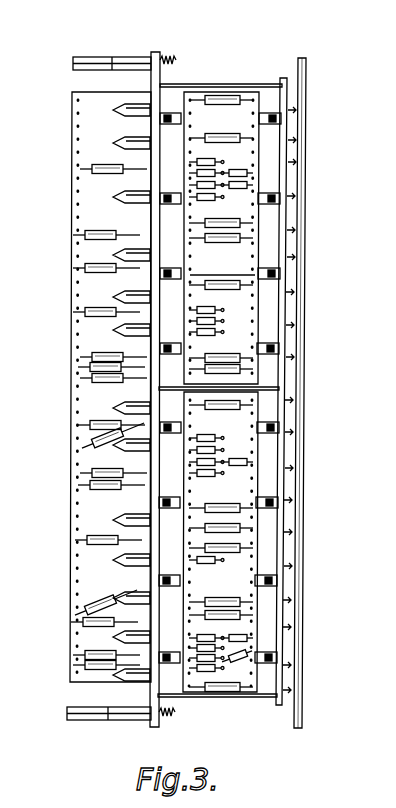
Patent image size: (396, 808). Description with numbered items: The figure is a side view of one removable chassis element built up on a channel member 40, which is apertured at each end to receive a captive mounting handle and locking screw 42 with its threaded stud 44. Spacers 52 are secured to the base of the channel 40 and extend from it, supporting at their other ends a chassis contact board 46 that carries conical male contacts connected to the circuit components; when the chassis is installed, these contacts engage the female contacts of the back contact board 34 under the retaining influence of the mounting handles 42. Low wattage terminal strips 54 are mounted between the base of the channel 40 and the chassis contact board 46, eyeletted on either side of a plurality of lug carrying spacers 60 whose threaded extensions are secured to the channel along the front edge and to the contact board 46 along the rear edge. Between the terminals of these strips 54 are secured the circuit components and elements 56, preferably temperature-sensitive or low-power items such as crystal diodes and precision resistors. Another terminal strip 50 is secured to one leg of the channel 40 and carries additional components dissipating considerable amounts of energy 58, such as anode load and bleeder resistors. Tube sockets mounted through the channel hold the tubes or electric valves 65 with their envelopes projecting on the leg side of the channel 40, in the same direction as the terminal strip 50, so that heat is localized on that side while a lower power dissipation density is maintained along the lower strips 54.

The back contact board 34 is at (306, 88).
The channel member 40 is at (156, 52).
The captive mounting handle and locking screw 42 is at (115, 57).
The threaded stud 44 is at (172, 62).
The chassis contact board 46 is at (284, 78).
The terminal strip 50 is at (95, 130).
The spacers 52 is at (232, 84).
The low wattage terminal strips 54 is at (230, 264).
The circuit components and elements 56 is at (215, 136).
The additional components dissipating considerable amounts of energy 58 is at (108, 174).
The lug carrying spacers 60 is at (178, 117).
The tubes or electric valves 65 is at (122, 147).